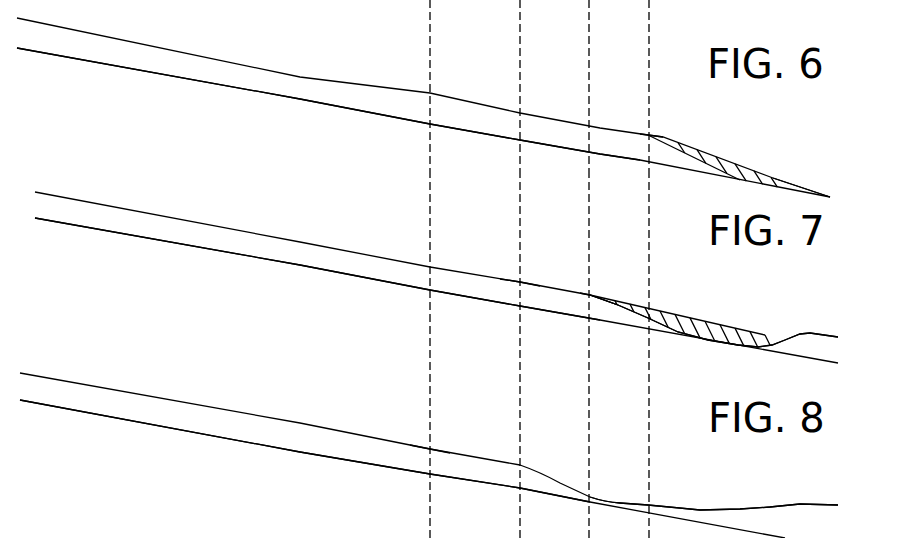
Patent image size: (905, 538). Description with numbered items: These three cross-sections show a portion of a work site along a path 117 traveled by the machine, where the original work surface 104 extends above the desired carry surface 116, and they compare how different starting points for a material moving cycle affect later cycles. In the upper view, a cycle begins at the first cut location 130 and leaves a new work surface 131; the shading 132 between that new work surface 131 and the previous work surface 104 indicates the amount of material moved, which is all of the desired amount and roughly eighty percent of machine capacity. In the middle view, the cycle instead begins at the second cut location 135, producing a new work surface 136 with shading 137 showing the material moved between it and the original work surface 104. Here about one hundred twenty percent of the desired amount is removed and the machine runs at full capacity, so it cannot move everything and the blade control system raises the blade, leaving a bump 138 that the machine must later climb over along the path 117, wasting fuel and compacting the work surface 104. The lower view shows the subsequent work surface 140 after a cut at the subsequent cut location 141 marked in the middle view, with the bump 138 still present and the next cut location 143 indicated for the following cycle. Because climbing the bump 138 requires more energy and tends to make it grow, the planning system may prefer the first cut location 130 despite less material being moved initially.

In FIG. 6, the work surface 104 is at (145, 43).
In FIG. 7, the work surface 104 is at (123, 210).
In FIG. 8, the work surface 104 is at (122, 393).
In FIG. 6, the desired carry surface 116 is at (218, 83).
In FIG. 7, the desired carry surface 116 is at (250, 247).
In FIG. 8, the desired carry surface 116 is at (262, 437).
In FIG. 6, the path 117 is at (485, 74).
In FIG. 6, the first cut location 130 is at (650, 135).
In FIG. 6, the new work surface 131 is at (693, 150).
In FIG. 6, the shading 132 is at (763, 175).
In FIG. 7, the second cut location 135 is at (590, 290).
In FIG. 7, the new work surface 136 is at (648, 318).
In FIG. 7, the shading 137 is at (693, 315).
In FIG. 7, the bump 138 is at (800, 347).
In FIG. 8, the bump 138 is at (765, 518).
In FIG. 8, the subsequent work surface 140 is at (660, 505).
In FIG. 7, the subsequent cut location 141 is at (520, 280).
In FIG. 8, the next cut location 143 is at (428, 449).